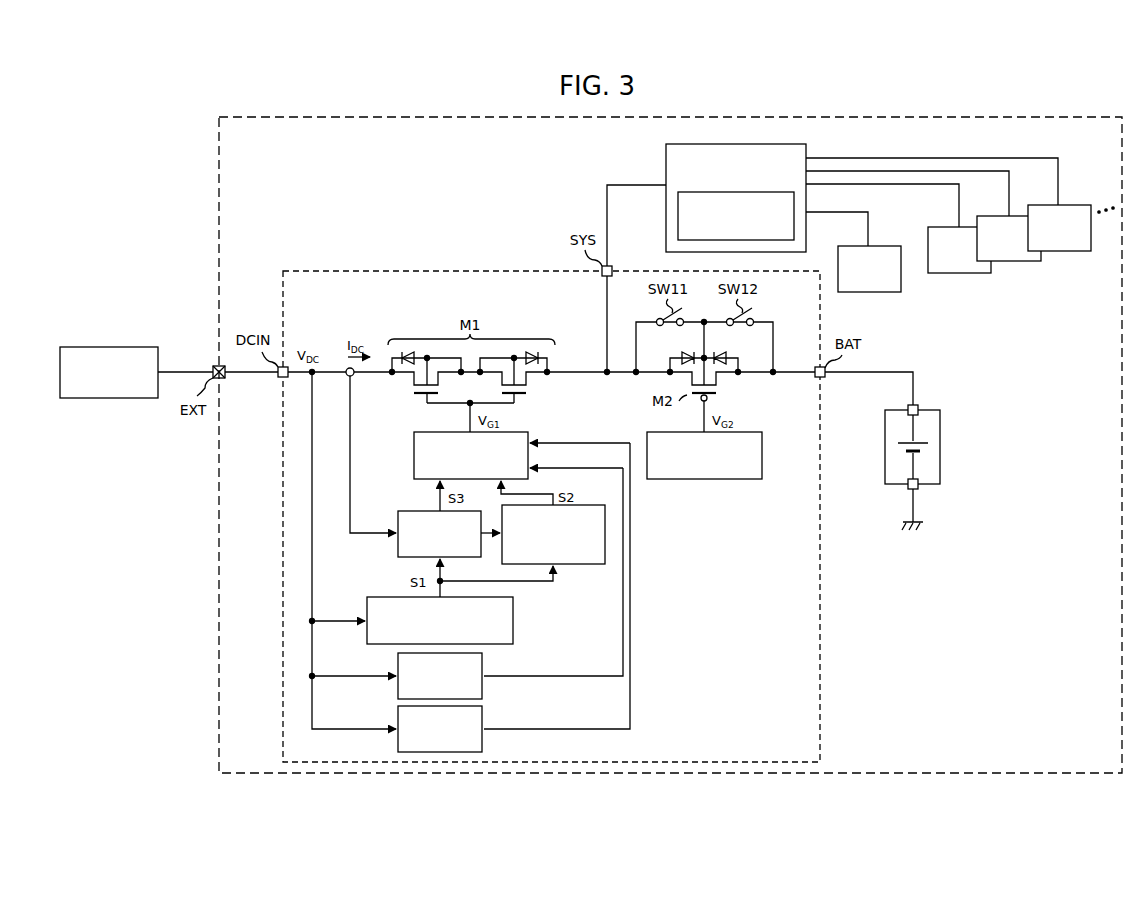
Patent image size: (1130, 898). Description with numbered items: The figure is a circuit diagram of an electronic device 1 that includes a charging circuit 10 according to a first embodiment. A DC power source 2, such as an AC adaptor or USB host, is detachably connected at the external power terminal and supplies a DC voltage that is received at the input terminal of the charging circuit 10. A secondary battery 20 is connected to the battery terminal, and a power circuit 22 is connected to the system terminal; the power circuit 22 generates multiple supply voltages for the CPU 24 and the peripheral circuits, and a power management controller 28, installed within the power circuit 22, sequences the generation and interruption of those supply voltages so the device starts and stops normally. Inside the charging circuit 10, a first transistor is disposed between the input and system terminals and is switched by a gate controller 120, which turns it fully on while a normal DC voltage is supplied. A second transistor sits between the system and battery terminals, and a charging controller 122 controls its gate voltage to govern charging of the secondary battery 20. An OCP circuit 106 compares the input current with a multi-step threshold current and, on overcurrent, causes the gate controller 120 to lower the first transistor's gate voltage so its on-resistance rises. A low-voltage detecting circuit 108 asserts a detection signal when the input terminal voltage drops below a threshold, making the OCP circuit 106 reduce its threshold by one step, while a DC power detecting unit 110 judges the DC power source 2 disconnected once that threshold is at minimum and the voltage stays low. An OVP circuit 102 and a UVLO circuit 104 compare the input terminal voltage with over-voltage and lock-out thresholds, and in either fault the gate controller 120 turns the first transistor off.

The electronic device 1 is at (573, 773).
The DC power source 2 is at (130, 398).
The charging circuit 10 is at (822, 667).
The secondary battery 20 is at (940, 438).
The power circuit 22 is at (735, 142).
The CPU 24 is at (880, 244).
The power management controller 28 is at (758, 192).
The OVP circuit 102 is at (482, 671).
The UVLO circuit 104 is at (482, 724).
The OCP circuit 106 is at (398, 511).
The low-voltage detecting circuit 108 is at (515, 618).
The DC power detecting unit 110 is at (572, 564).
The gate controller 120 is at (528, 434).
The charging controller 122 is at (717, 479).